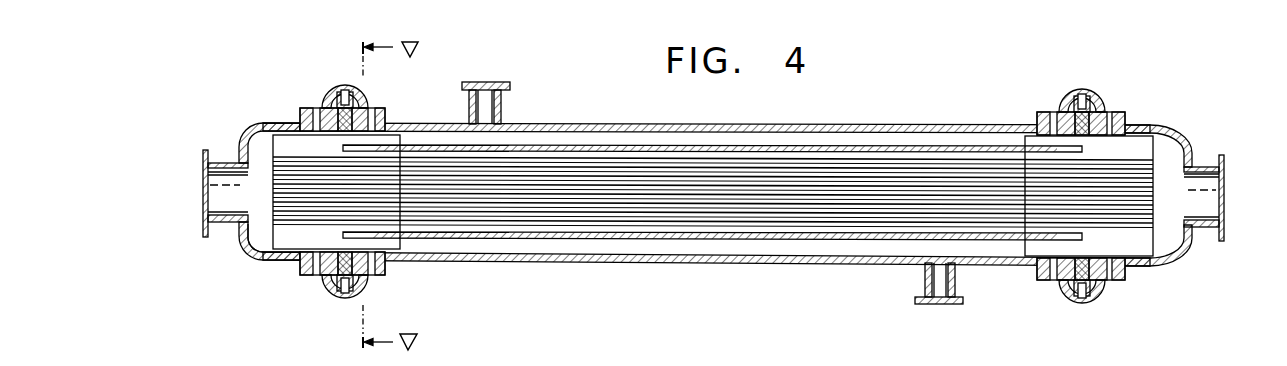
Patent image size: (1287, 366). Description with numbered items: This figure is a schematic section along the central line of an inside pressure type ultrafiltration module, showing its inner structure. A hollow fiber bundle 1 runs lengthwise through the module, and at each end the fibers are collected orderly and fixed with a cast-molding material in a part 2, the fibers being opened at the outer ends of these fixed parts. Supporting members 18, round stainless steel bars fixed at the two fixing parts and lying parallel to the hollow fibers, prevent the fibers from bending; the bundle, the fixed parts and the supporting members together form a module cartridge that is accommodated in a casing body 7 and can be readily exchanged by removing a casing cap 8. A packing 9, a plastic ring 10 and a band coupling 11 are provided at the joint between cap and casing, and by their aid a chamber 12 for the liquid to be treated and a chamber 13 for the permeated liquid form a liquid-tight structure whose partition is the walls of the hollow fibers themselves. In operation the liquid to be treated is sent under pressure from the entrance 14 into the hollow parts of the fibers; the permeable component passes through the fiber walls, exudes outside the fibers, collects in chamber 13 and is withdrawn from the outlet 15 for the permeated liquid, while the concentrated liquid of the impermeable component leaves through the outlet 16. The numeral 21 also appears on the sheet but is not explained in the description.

The hollow fiber bundle 1 is at (937, 170).
The part in which fibers are collected and fixed 2 is at (291, 142).
The casing body 7 is at (893, 125).
The casing cap 8 is at (246, 133).
The packing 9 is at (385, 108).
The plastic ring 10 is at (322, 107).
The band coupling 11 is at (350, 83).
The chamber for a to-be-treated liquid 12 is at (248, 231).
The chamber for the liquid permeated through the hollow fiber membranes 13 is at (569, 250).
The entrance of the liquid to be treated 14 is at (206, 195).
The outlet for the permeated liquid 15 is at (500, 94).
The outlet for the concentrated liquid of impermeable component 16 is at (1213, 200).
The supporting members 18 is at (599, 147).
The support 21 is at (890, 363).